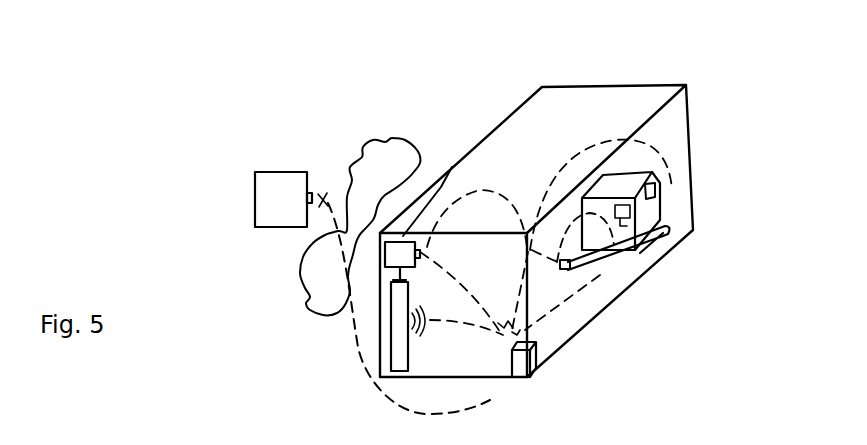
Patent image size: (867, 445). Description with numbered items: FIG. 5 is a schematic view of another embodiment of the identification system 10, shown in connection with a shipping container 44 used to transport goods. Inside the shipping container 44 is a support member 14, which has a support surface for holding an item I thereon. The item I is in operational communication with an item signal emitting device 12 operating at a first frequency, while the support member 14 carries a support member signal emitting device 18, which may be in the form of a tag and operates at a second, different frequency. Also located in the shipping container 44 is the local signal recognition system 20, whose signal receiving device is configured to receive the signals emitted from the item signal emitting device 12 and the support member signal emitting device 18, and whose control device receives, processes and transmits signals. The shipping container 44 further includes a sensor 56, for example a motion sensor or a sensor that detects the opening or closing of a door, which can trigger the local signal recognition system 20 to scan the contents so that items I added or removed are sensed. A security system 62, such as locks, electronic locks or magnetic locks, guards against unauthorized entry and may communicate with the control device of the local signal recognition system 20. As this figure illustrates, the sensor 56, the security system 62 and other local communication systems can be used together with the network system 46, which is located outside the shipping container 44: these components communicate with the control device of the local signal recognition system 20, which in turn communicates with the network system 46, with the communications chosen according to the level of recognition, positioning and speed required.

The identification system 10 is at (251, 302).
The item signal emitting device 12 is at (655, 192).
The support member 14 is at (657, 253).
The support member signal emitting device 18 is at (566, 268).
The local signal recognition system 20 is at (538, 352).
The shipping container 44 is at (581, 88).
The network system 46 is at (285, 162).
The sensor 56 is at (390, 350).
The security system 62 is at (452, 167).
The item I is at (662, 183).